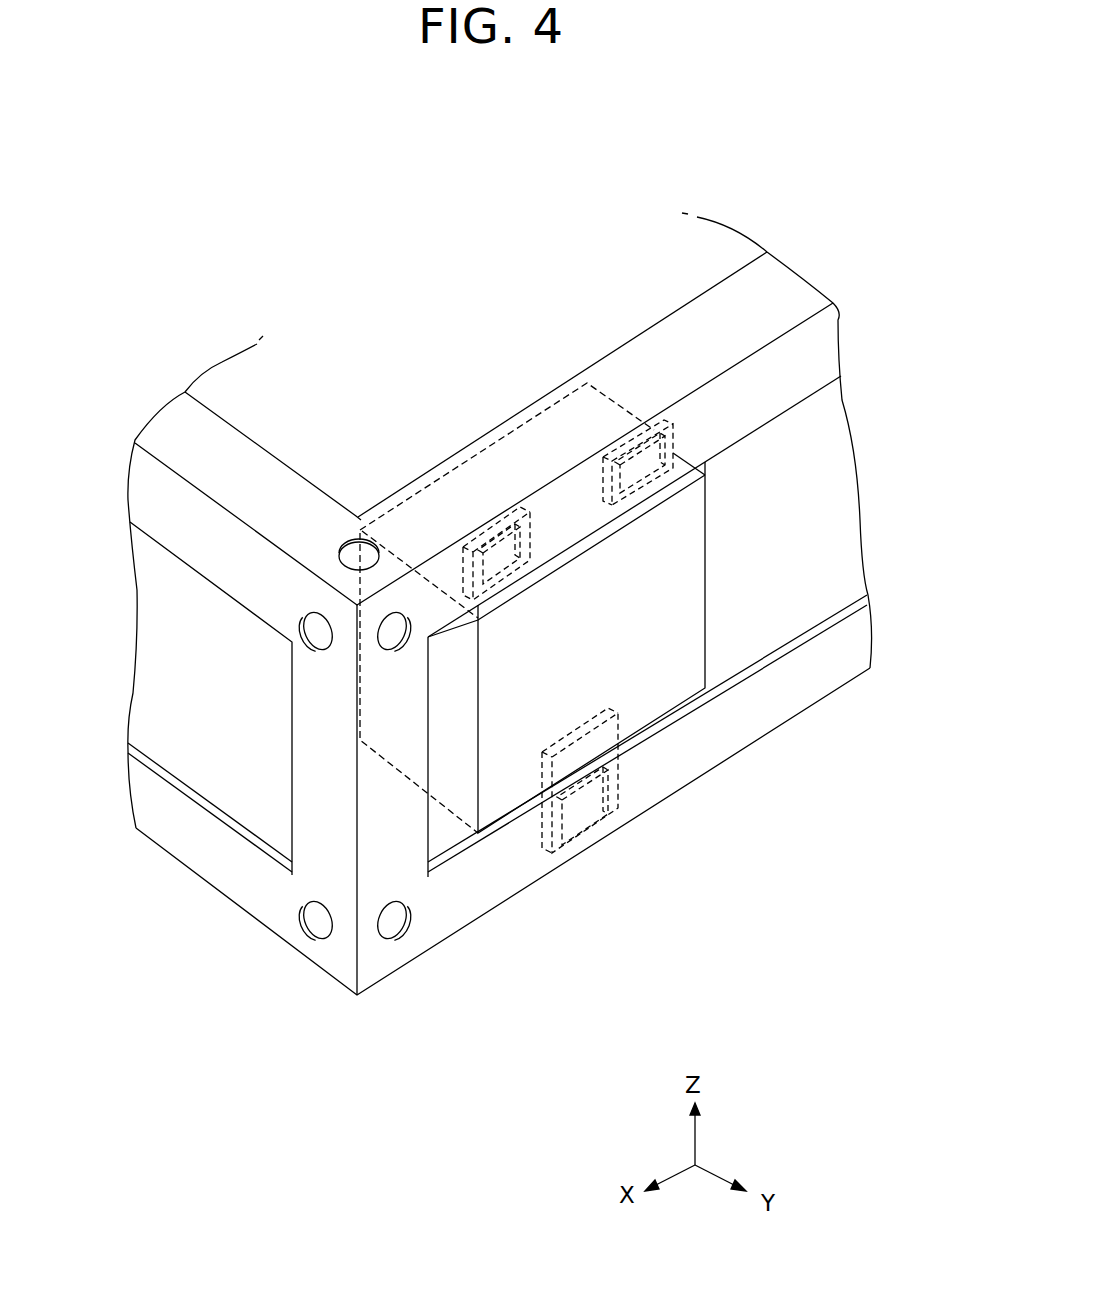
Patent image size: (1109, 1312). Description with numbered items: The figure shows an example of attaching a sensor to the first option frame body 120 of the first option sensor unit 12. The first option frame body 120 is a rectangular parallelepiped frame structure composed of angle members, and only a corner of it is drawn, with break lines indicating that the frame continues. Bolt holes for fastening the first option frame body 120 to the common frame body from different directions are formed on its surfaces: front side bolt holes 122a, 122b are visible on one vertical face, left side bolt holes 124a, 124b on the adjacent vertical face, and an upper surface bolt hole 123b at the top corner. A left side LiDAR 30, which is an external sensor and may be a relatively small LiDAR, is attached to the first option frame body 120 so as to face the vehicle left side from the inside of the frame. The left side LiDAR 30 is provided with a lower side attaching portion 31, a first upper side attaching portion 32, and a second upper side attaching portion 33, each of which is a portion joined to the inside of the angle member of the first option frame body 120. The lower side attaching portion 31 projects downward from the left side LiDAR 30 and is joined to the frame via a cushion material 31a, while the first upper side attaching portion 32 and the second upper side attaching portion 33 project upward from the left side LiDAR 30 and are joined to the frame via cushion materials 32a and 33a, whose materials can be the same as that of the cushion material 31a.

The first option sensor unit 12 is at (487, 226).
The first option frame body 120 is at (244, 455).
The front side bolt hole 122a is at (301, 629).
The front side bolt hole 122b is at (308, 934).
The upper surface bolt hole 123b is at (349, 537).
The left side bolt hole 124a is at (411, 636).
The left side bolt hole 124b is at (404, 936).
The left side LiDAR 30 is at (657, 680).
The lower side attaching portion 31 is at (620, 787).
The cushion material 31a is at (588, 848).
The first upper side attaching portion 32 is at (462, 540).
The cushion material 32a is at (487, 543).
The second upper side attaching portion 33 is at (672, 433).
The cushion material 33a is at (650, 462).